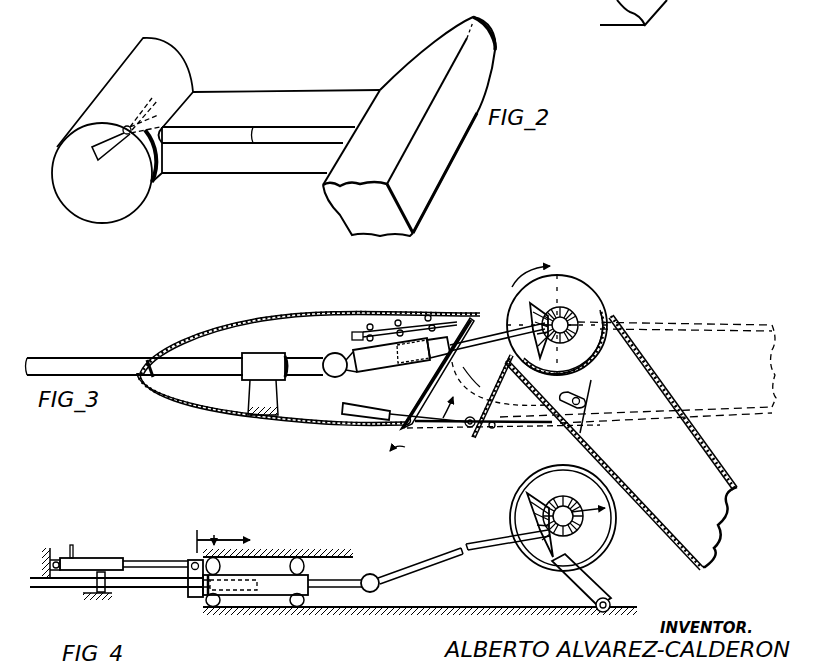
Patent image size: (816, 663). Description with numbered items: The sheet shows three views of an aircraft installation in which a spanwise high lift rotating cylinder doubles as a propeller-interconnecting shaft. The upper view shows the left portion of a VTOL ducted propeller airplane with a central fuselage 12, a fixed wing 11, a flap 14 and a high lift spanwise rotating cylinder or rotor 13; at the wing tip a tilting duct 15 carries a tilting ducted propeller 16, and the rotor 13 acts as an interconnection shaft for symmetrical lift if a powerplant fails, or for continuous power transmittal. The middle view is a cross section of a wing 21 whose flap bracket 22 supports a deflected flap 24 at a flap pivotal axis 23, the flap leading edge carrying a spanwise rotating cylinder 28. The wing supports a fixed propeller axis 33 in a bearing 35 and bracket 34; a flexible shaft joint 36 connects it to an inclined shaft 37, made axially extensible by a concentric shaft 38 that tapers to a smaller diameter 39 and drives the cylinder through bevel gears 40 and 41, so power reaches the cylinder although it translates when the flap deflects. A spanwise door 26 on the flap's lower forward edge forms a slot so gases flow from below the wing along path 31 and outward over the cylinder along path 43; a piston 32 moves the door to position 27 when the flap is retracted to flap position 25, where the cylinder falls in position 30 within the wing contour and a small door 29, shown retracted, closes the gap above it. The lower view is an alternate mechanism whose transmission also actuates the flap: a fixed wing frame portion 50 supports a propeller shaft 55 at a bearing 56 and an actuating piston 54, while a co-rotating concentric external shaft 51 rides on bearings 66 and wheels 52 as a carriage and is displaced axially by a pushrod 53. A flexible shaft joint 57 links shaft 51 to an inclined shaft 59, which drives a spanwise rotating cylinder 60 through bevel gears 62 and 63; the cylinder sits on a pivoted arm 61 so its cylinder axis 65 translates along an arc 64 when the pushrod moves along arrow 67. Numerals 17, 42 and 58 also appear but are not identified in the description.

In FIG. 2, the fixed wing 11 is at (248, 90).
In FIG. 2, the central fuselage 12 is at (400, 67).
In FIG. 2, the high lift spanwise rotating cylinder 13 is at (205, 145).
In FIG. 2, the flap 14 is at (268, 174).
In FIG. 2, the tilting duct 15 is at (92, 100).
In FIG. 2, the tilting ducted propeller 16 is at (92, 147).
In FIG. 2, the propeller hub 17 is at (177, 121).
In FIG. 3, the wing 21 is at (236, 322).
In FIG. 3, the flap bracket 22 is at (510, 423).
In FIG. 3, the flap pivotal axis 23 is at (556, 420).
In FIG. 3, the flap 24 is at (707, 447).
In FIG. 3, the flap retracted position 25 is at (713, 322).
In FIG. 3, the spanwise door 26 is at (490, 427).
In FIG. 3, the door closed position 27 is at (447, 427).
In FIG. 3, the spanwise rotating cylinder 28 is at (580, 277).
In FIG. 3, the small door 29 is at (440, 337).
In FIG. 3, the cylinder retracted position 30 is at (498, 283).
In FIG. 3, the flow path 31 is at (383, 451).
In FIG. 3, the piston 32 is at (355, 414).
In FIG. 3, the propeller axis 33 is at (95, 357).
In FIG. 3, the bracket 34 is at (278, 398).
In FIG. 3, the bearing 35 is at (248, 352).
In FIG. 3, the flexible shaft joint 36 is at (337, 352).
In FIG. 3, the inclined shaft 37 is at (378, 340).
In FIG. 3, the concentric shaft 38 is at (420, 320).
In FIG. 3, the smaller diameter portion 39 is at (462, 347).
In FIG. 3, the bevel gear 40 is at (540, 302).
In FIG. 3, the bevel gear 41 is at (575, 305).
In FIG. 3, the hub center 42 is at (566, 323).
In FIG. 3, the flow path 43 is at (534, 266).
In FIG. 4, the fixed wing frame portion 50 is at (281, 557).
In FIG. 4, the concentric external shaft 51 is at (262, 597).
In FIG. 4, the wheels 52 is at (206, 598).
In FIG. 4, the pushrod 53 is at (147, 560).
In FIG. 4, the actuating piston 54 is at (92, 558).
In FIG. 4, the propeller shaft 55 is at (146, 589).
In FIG. 4, the bearing 56 is at (94, 594).
In FIG. 4, the flexible shaft joint 57 is at (373, 573).
In FIG. 4, the clevis 58 is at (193, 597).
In FIG. 4, the inclined shaft 59 is at (487, 541).
In FIG. 4, the spanwise rotating cylinder 60 is at (612, 540).
In FIG. 4, the pivoted arm 61 is at (607, 576).
In FIG. 4, the bevel gear 62 is at (561, 496).
In FIG. 4, the bevel gear 63 is at (545, 547).
In FIG. 4, the arc 64 is at (588, 520).
In FIG. 4, the cylinder axis 65 is at (532, 500).
In FIG. 4, the bearings 66 is at (215, 606).
In FIG. 4, the arrow 67 is at (208, 540).